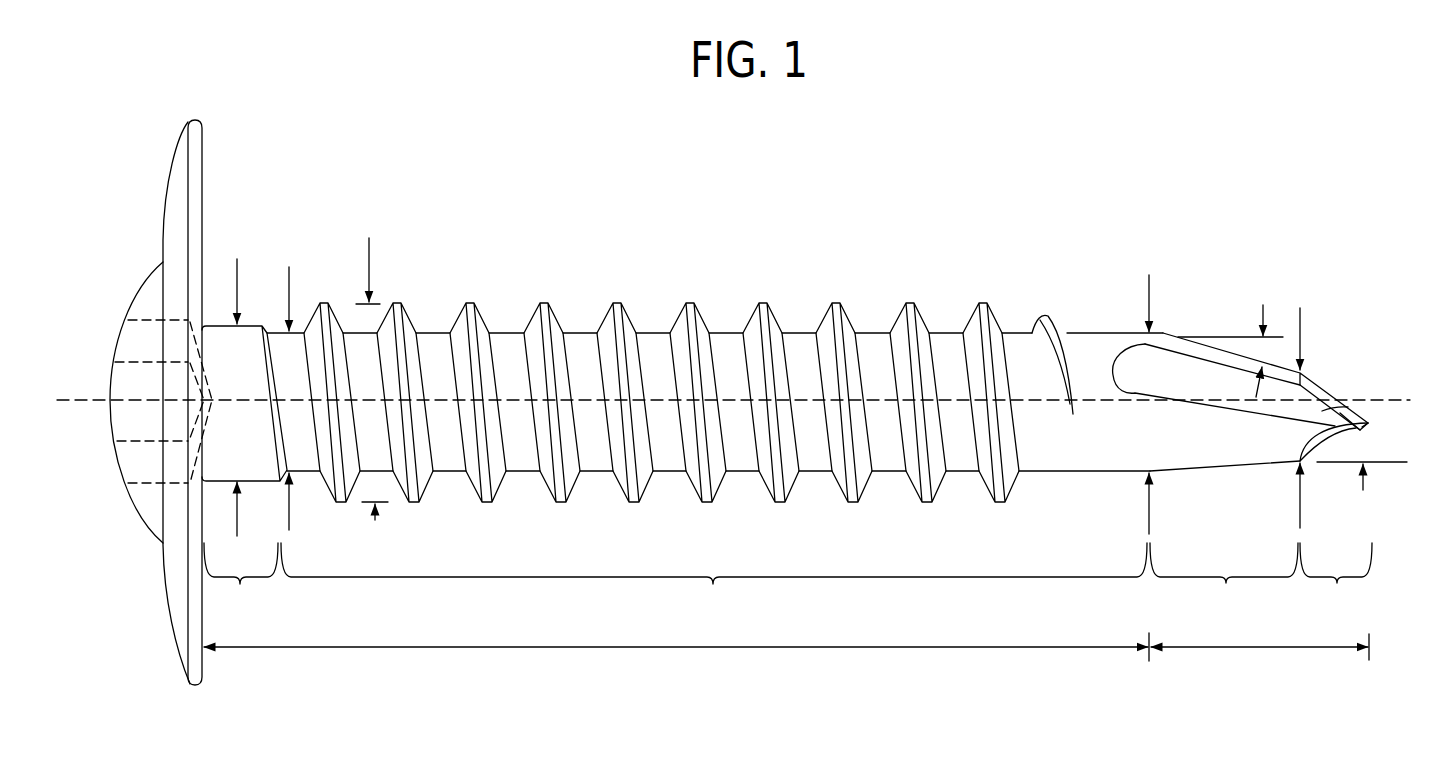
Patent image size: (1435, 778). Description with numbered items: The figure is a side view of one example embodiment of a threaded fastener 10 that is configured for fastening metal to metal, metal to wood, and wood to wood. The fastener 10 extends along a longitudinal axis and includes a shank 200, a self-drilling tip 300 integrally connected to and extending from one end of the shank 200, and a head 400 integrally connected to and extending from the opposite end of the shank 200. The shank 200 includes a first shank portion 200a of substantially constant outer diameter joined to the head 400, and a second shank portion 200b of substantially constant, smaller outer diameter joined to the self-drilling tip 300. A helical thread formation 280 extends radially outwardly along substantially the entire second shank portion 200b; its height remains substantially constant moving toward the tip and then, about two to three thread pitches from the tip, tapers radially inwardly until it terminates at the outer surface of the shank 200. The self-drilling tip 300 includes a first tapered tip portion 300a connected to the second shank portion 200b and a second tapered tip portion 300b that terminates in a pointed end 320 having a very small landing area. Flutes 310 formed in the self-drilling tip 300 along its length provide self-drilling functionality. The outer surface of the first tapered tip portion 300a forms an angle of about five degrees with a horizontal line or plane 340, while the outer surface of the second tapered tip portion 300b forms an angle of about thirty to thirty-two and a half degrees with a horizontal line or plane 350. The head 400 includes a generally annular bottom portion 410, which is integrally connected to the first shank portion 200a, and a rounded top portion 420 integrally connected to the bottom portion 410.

The threaded fastener 10 is at (1108, 126).
The head 400 is at (194, 117).
The bottom portion 410 is at (167, 190).
The top portion 420 is at (130, 302).
The shank 200 is at (434, 331).
The first shank portion 200a is at (241, 580).
The second shank portion 200b is at (714, 580).
The helical thread formation 280 is at (540, 303).
The self-drilling tip 300 is at (1334, 371).
The first tapered tip portion 300a is at (1230, 480).
The second tapered tip portion 300b is at (1365, 475).
The flutes 310 is at (1357, 428).
The pointed end 320 is at (1370, 423).
The horizontal line or plane 340 is at (1221, 337).
The horizontal line or plane 350 is at (1388, 464).